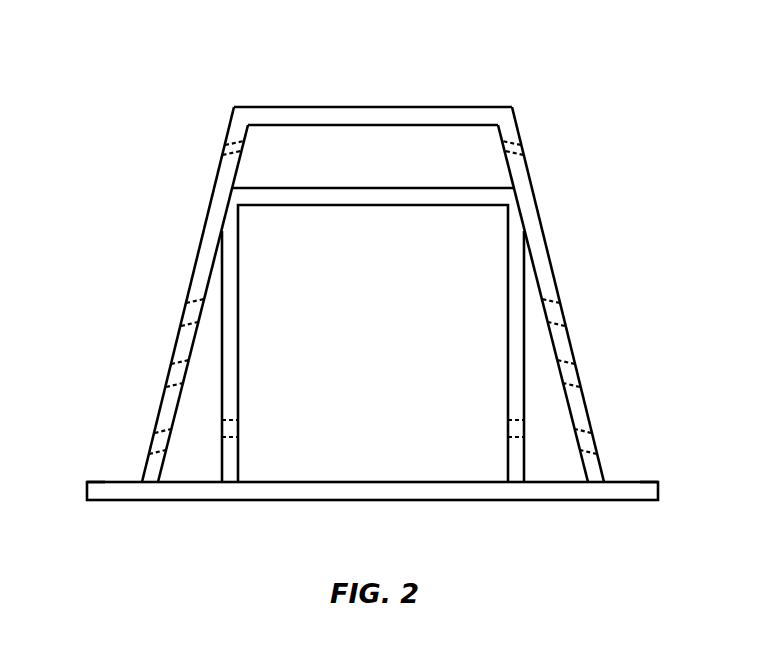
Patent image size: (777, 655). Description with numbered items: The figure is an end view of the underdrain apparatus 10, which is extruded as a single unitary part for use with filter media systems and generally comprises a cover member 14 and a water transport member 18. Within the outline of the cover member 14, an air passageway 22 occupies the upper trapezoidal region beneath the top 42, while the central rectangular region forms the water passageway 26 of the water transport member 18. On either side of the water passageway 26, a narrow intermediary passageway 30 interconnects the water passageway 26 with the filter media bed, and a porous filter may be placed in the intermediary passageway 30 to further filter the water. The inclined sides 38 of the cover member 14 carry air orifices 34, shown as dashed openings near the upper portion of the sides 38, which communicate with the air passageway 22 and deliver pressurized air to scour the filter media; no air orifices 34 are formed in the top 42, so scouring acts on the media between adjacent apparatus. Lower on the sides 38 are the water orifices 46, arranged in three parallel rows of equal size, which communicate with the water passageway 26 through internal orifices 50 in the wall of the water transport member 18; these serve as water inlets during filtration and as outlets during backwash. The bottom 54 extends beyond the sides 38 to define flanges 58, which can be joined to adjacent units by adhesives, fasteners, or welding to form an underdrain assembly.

The underdrain apparatus 10 is at (517, 62).
The cover member 14 is at (266, 108).
The water transport member 18 is at (239, 296).
The air passageway 22 is at (381, 168).
The water passageway 26 is at (384, 341).
The intermediary passageway 30 is at (204, 448).
The air orifices 34 is at (227, 148).
The sides 38 is at (208, 205).
The top 42 is at (363, 107).
The water orifices 46 is at (183, 308).
The internal orifices 50 is at (238, 428).
The bottom 54 is at (477, 500).
The flanges 58 is at (102, 482).